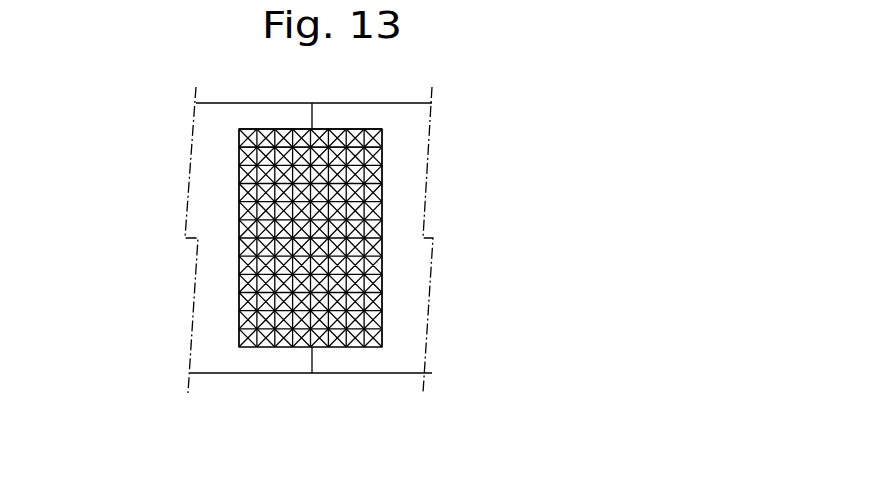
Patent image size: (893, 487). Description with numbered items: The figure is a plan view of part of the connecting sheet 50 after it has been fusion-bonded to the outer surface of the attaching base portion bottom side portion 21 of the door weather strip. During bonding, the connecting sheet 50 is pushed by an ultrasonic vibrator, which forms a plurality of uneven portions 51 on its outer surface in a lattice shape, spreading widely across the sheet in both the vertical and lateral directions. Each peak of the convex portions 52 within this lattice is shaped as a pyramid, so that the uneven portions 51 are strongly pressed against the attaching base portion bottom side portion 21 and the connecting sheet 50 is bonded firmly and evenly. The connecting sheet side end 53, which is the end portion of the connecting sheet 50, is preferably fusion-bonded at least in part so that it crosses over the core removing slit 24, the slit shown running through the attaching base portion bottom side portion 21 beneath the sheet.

The attaching base portion bottom side portion 21 is at (210, 352).
The core removing slit 24 is at (312, 373).
The connecting sheet 50 is at (383, 276).
The uneven portions 51 is at (243, 143).
The convex portions 52 is at (257, 128).
The connecting sheet side end 53 is at (240, 154).